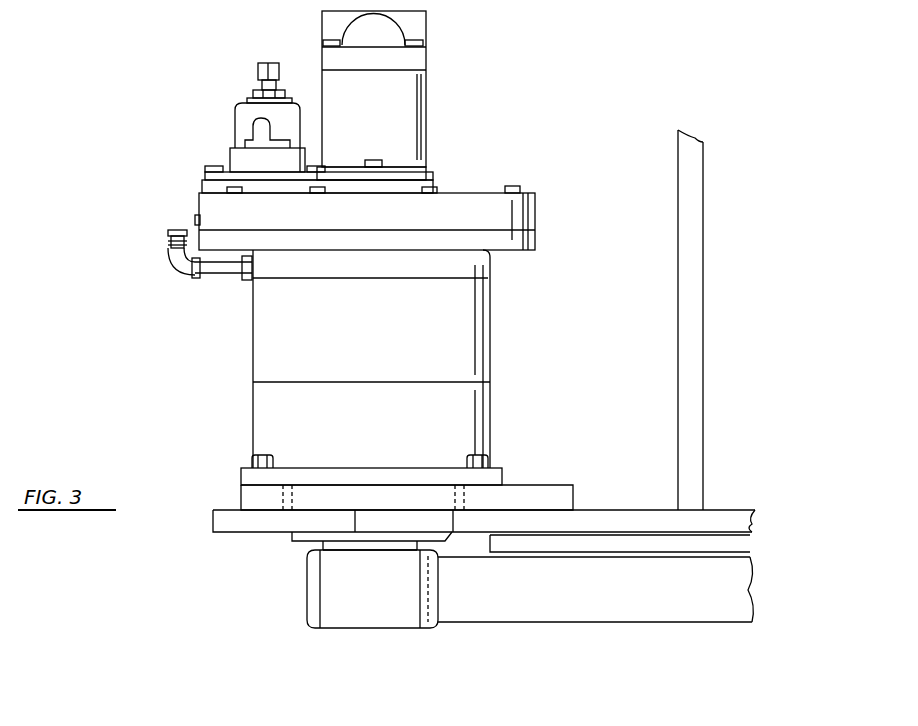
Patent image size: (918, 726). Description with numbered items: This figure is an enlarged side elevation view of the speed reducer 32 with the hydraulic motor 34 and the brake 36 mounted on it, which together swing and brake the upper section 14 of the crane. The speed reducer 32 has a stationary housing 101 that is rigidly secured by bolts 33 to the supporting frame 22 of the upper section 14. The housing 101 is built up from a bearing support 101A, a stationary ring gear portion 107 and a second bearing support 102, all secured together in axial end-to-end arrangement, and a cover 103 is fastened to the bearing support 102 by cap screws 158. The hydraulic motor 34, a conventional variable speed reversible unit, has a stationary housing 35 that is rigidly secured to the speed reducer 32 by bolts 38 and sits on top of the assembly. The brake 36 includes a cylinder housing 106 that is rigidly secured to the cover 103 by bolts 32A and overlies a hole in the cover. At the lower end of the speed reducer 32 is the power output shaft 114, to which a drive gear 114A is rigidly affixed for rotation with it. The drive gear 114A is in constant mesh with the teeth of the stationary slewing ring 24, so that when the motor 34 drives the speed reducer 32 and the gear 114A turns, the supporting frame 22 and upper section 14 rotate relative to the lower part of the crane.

The upper section 14 is at (730, 493).
The supporting frame 22 is at (703, 343).
The slewing ring 24 is at (522, 612).
The speed reducer 32 is at (419, 359).
The bolts 32A is at (205, 172).
The bolts 33 is at (255, 456).
The hydraulic motor 34 is at (432, 91).
The stationary housing 35 is at (428, 116).
The brake 36 is at (233, 103).
The bolts 38 is at (374, 160).
The stationary housing 101 is at (483, 403).
The bearing support 101A is at (293, 538).
The bearing support 102 is at (490, 266).
The cover 103 is at (483, 192).
The cylinder housing 106 is at (235, 133).
The stationary ring gear portion 107 is at (492, 353).
The power output shaft 114 is at (322, 546).
The drive gear 114A is at (330, 598).
The cap screws 158 is at (513, 186).